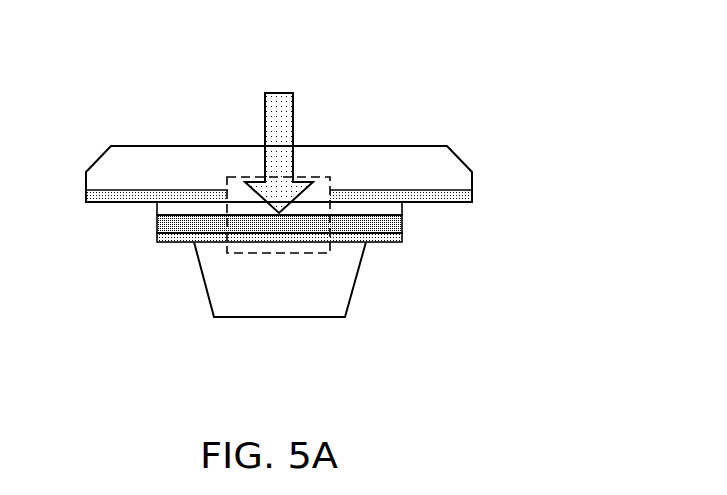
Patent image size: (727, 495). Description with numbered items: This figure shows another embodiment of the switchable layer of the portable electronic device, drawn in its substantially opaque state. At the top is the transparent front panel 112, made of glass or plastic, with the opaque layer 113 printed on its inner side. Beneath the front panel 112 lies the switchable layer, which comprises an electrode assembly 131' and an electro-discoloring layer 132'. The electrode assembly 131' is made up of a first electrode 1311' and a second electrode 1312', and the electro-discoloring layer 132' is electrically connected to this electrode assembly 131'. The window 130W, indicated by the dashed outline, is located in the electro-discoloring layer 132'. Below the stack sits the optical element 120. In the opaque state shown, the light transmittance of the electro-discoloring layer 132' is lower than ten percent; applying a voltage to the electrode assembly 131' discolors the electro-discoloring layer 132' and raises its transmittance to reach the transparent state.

The front panel 112 is at (443, 158).
The opaque layer 113 is at (467, 195).
The electrode assembly 131' is at (386, 121).
The first electrode 1311' is at (337, 221).
The second electrode 1312' is at (337, 260).
The electro-discoloring layer 132' is at (331, 239).
The window 130W is at (225, 254).
The optical element 120 is at (340, 292).